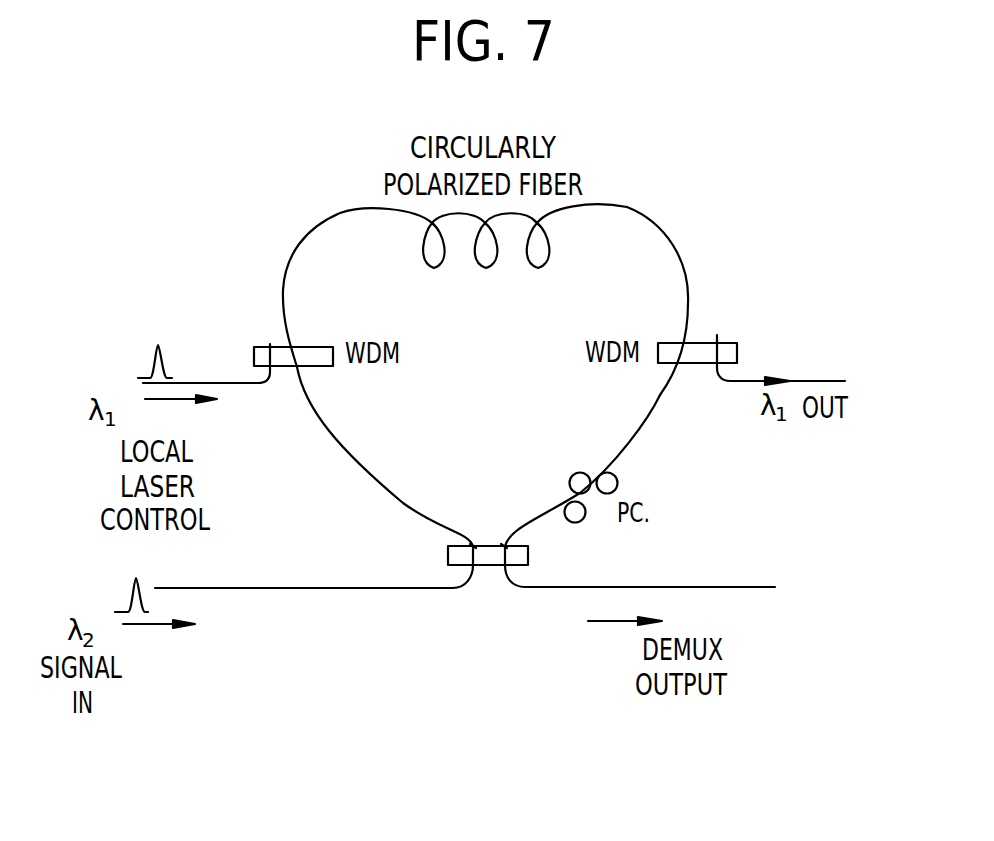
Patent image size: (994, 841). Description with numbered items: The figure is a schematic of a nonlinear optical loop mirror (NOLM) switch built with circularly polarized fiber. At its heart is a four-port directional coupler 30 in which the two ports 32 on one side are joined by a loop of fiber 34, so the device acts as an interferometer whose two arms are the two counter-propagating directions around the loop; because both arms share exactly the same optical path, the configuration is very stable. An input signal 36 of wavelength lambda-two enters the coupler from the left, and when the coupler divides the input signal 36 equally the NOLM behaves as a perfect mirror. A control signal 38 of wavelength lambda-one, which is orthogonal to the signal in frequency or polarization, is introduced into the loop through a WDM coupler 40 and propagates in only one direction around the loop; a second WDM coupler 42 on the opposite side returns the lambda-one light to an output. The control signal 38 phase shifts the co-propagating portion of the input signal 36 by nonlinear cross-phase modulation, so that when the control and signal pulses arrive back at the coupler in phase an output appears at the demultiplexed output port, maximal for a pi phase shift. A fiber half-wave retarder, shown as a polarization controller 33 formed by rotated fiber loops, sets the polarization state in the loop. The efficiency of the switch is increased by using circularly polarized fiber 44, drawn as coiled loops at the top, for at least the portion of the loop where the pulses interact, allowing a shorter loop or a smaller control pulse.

The four-port directional coupler 30 is at (488, 572).
The ports 32 is at (504, 546).
The fiber half-wave retarder 33 is at (590, 498).
The loop of fiber 34 is at (645, 428).
The input signal 36 is at (130, 593).
The control signal 38 is at (165, 361).
The WDM coupler 40 is at (313, 367).
The WDM coupler 42 is at (697, 343).
The circularly polarized fiber 44 is at (627, 208).